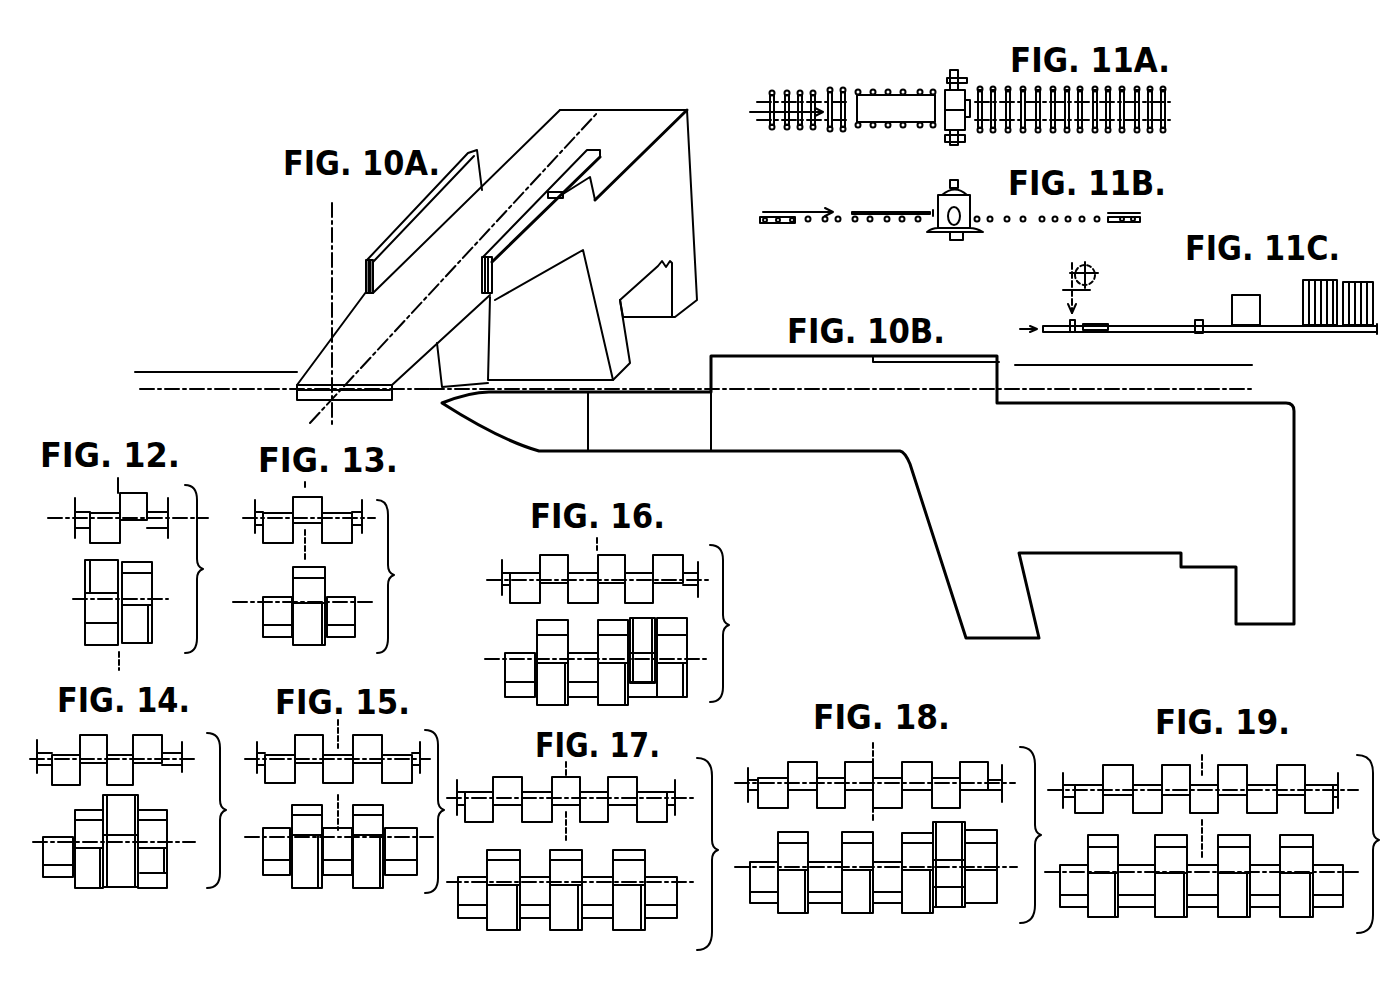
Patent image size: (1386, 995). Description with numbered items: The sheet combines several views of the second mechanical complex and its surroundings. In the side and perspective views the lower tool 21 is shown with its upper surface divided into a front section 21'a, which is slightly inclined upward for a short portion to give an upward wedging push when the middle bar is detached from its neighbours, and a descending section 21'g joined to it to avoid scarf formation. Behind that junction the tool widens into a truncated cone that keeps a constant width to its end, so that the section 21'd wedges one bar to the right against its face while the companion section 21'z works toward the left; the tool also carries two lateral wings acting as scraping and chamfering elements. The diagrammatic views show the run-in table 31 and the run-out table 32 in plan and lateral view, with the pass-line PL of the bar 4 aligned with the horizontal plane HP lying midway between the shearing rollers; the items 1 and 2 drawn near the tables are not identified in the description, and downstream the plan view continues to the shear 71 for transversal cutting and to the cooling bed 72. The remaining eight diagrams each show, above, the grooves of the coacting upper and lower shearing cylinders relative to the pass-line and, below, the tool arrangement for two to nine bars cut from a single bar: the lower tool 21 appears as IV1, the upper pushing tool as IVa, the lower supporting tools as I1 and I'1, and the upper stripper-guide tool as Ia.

In FIG. 10A, the lower tool 21 is at (566, 248).
In FIG. 10B, the lower tool 21 is at (895, 497).
In FIG. 10A, the front section 21'a is at (348, 408).
In FIG. 10B, the front section 21'a is at (464, 429).
In FIG. 10A, the expansion wedging section 21'd is at (550, 315).
In FIG. 10B, the expansion wedging section 21'd is at (692, 466).
In FIG. 10A, the descendent section 21'g is at (466, 225).
In FIG. 10B, the descendent section 21'g is at (843, 407).
In FIG. 10A, the lateral wedging section 21'z is at (318, 338).
In FIG. 11A, the pass-line PL is at (793, 97).
In FIG. 11B, the pass-line PL is at (793, 213).
In FIG. 11A, the feed element 2 is at (939, 73).
In FIG. 11C, the feed element 2 is at (1077, 333).
In FIG. 11A, the run-in table 31 is at (828, 130).
In FIG. 11B, the run-in table 31 is at (838, 216).
In FIG. 11C, the run-in table 31 is at (1053, 320).
In FIG. 11A, the bar 4 is at (895, 125).
In FIG. 11B, the bar 4 is at (877, 212).
In FIG. 11A, the coupling head 1 is at (957, 113).
In FIG. 11B, the coupling head 1 is at (947, 210).
In FIG. 11C, the coupling head 1 is at (1070, 333).
In FIG. 11A, the run-out table 32 is at (1068, 127).
In FIG. 11B, the run-out table 32 is at (1023, 221).
In FIG. 11C, the run-out table 32 is at (1128, 325).
In FIG. 11B, the horizontal plane HP is at (783, 223).
In FIG. 11C, the shear 71 is at (1202, 333).
In FIG. 11C, the cooling bed 72 is at (1303, 285).
In FIG. 12, the upper stripper-guide tool Ia is at (148, 565).
In FIG. 13, the upper stripper-guide tool Ia is at (323, 571).
In FIG. 14, the upper stripper-guide tool Ia is at (83, 810).
In FIG. 15, the upper stripper-guide tool Ia is at (297, 808).
In FIG. 16, the upper stripper-guide tool Ia is at (542, 628).
In FIG. 17, the upper stripper-guide tool Ia is at (490, 851).
In FIG. 18, the upper stripper-guide tool Ia is at (785, 831).
In FIG. 19, the upper stripper-guide tool Ia is at (1095, 838).
In FIG. 12, the upper pushing tool IVa is at (88, 569).
In FIG. 14, the upper pushing tool IVa is at (127, 803).
In FIG. 16, the upper pushing tool IVa is at (645, 627).
In FIG. 18, the upper pushing tool IVa is at (950, 830).
In FIG. 12, the lower supporting tool I1 is at (93, 635).
In FIG. 13, the lower supporting tool I1 is at (275, 637).
In FIG. 14, the lower supporting tool I1 is at (58, 872).
In FIG. 15, the lower supporting tool I1 is at (277, 872).
In FIG. 16, the lower supporting tool I1 is at (515, 695).
In FIG. 17, the lower supporting tool I1 is at (470, 920).
In FIG. 18, the lower supporting tool I1 is at (760, 905).
In FIG. 19, the lower supporting tool I1 is at (1068, 908).
In FIG. 12, the lower wedging tool IV1 is at (140, 643).
In FIG. 13, the lower wedging tool IV1 is at (315, 645).
In FIG. 14, the lower wedging tool IV1 is at (92, 878).
In FIG. 15, the lower wedging tool IV1 is at (303, 885).
In FIG. 16, the lower wedging tool IV1 is at (543, 703).
In FIG. 17, the lower wedging tool IV1 is at (503, 932).
In FIG. 18, the lower wedging tool IV1 is at (792, 915).
In FIG. 19, the lower wedging tool IV1 is at (1103, 918).
In FIG. 14, the lower pushing stripper tool I'1 is at (174, 889).
In FIG. 16, the lower pushing stripper tool I'1 is at (689, 710).
In FIG. 18, the lower pushing stripper tool I'1 is at (987, 923).